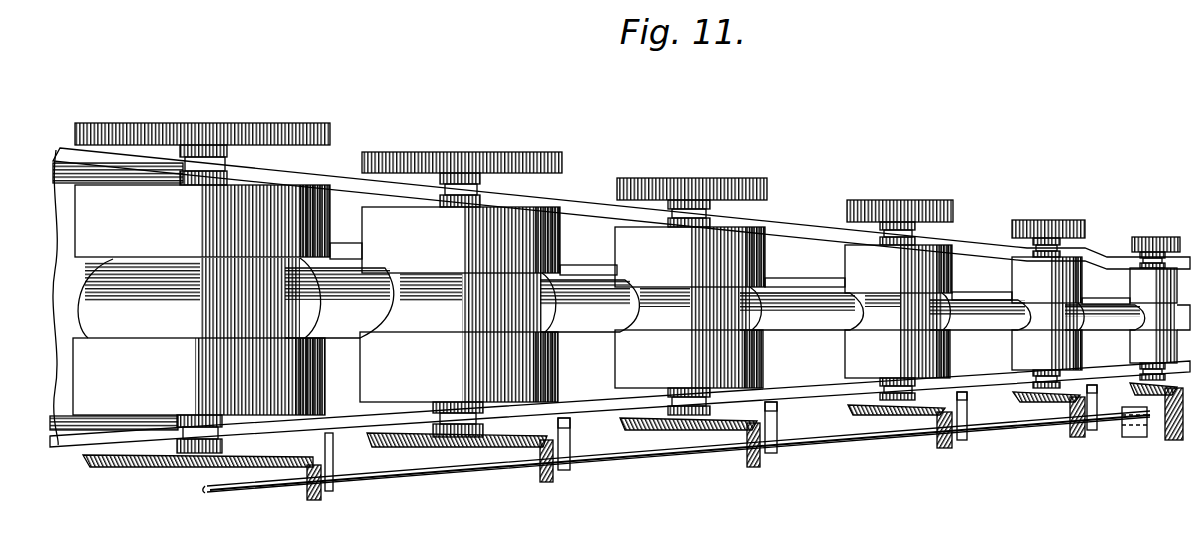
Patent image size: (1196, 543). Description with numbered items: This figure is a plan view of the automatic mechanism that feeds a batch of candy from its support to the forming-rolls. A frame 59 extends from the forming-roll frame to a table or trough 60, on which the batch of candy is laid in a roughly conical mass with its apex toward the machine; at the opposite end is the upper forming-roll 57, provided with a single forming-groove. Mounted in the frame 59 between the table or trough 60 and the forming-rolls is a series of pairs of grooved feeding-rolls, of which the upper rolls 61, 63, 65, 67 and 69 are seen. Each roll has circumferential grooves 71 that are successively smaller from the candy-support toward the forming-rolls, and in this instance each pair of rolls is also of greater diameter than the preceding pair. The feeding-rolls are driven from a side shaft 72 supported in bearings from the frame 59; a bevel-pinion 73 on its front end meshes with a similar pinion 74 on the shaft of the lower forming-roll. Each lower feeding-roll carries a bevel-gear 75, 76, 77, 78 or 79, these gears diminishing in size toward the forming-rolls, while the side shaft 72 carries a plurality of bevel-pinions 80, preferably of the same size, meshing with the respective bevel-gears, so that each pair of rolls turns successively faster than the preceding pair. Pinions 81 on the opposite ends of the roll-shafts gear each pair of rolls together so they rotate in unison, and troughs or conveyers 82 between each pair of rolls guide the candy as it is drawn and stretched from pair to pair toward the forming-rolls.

The upper forming-roll 57 is at (1131, 282).
The frame 59 is at (590, 200).
The table or trough 60 is at (60, 170).
The feeding-roll 61 is at (143, 197).
The feeding-roll 63 is at (430, 220).
The feeding-roll 65 is at (642, 247).
The feeding-roll 67 is at (862, 263).
The feeding-roll 69 is at (1033, 267).
The circumferential grooves 71 is at (380, 318).
The side shaft 72 is at (427, 477).
The bevel-pinion 73 is at (1173, 417).
The bevel-pinion 74 is at (1153, 410).
The bevel-gear 75 is at (272, 468).
The bevel-gear 76 is at (503, 448).
The bevel-gear 77 is at (710, 432).
The bevel-gear 78 is at (918, 418).
The bevel-gear 79 is at (1053, 407).
The bevel-pinions 80 is at (310, 500).
The pinions 81 is at (272, 127).
The troughs or conveyers 82 is at (343, 258).